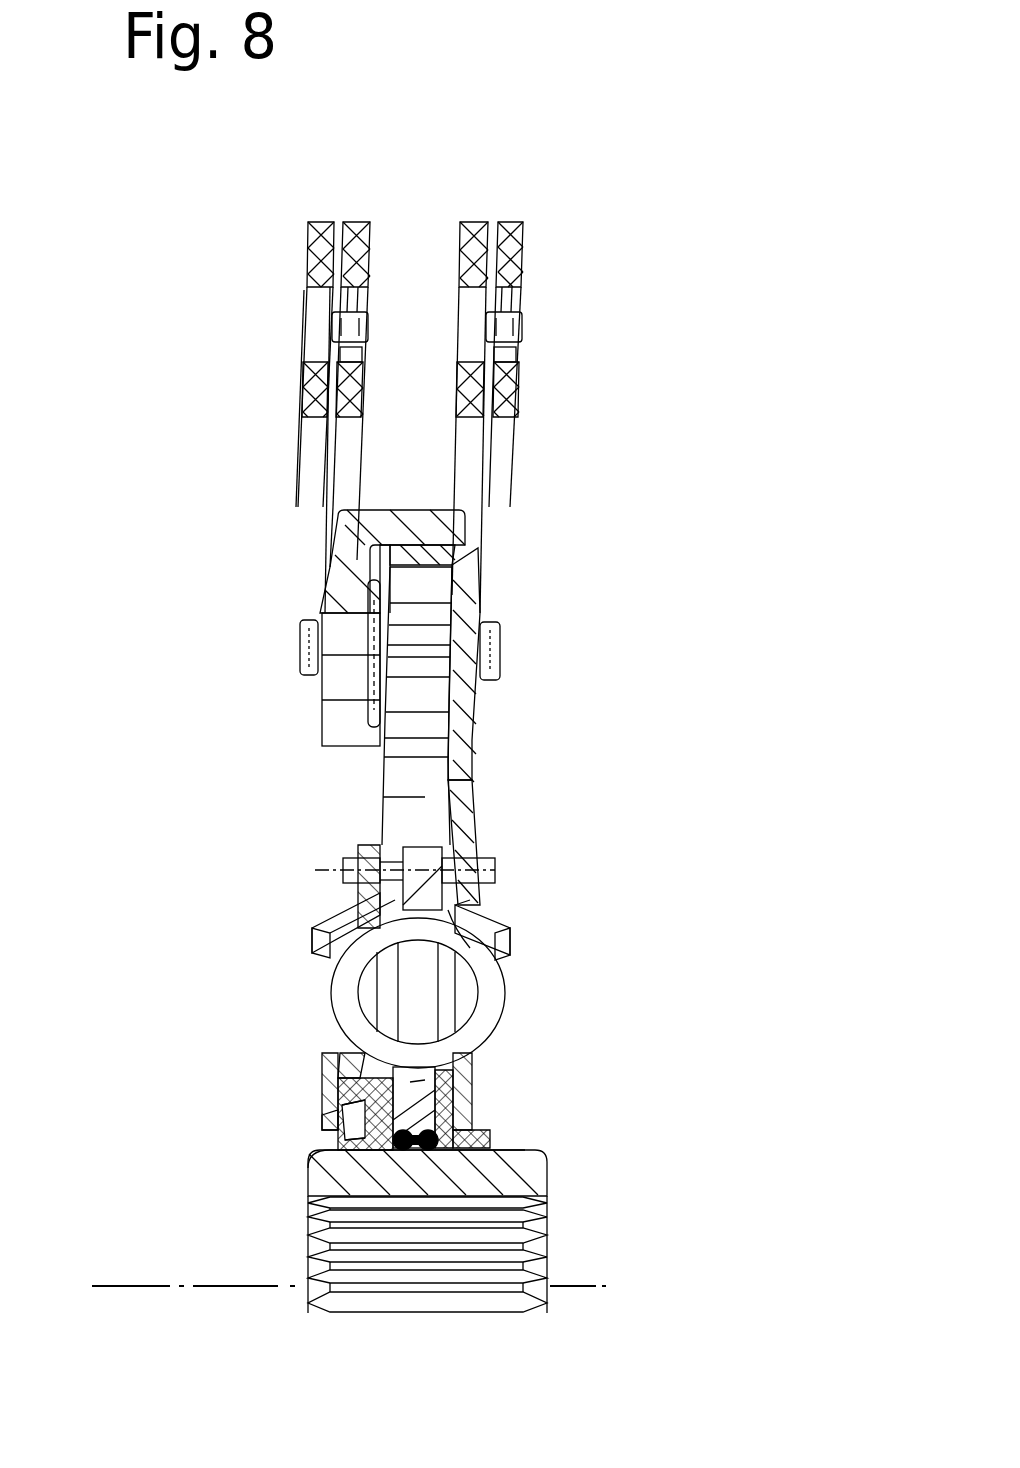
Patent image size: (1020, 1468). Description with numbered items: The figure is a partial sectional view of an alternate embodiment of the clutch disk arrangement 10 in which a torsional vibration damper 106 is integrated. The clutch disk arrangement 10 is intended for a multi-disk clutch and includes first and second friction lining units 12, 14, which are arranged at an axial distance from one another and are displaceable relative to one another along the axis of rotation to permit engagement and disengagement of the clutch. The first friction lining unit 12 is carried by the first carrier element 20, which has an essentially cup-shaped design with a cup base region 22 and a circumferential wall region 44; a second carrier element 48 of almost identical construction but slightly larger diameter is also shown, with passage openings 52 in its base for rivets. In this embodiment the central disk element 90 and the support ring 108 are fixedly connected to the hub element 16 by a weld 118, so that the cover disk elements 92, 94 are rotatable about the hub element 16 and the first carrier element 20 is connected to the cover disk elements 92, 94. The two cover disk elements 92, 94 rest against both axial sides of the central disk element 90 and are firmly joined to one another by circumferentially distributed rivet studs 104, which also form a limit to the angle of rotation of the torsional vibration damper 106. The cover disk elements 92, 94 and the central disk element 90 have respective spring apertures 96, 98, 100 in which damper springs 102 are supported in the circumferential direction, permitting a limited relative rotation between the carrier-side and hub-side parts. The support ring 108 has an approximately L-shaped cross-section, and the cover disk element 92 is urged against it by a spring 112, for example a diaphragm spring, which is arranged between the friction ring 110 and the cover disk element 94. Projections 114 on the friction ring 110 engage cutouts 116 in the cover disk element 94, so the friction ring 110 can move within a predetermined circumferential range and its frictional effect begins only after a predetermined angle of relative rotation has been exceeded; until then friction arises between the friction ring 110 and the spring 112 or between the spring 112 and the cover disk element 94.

The clutch disk arrangement 10 is at (705, 256).
The first friction lining unit 12 is at (495, 200).
The second friction lining unit 14 is at (337, 200).
The hub element 16 is at (540, 1180).
The first carrier element 20 is at (480, 607).
The cup base region 22 is at (478, 806).
The circumferential wall region 44 is at (440, 549).
The second carrier element 48 is at (340, 591).
The passage openings 52 is at (408, 510).
The central disk element 90 is at (460, 1072).
The cover disk element 92 is at (470, 1082).
The cover disk element 94 is at (328, 1062).
The spring aperture 96 is at (498, 932).
The spring aperture 98 is at (430, 1075).
The spring aperture 100 is at (342, 1050).
The damper spring 102 is at (345, 970).
The rivet studs 104 is at (492, 871).
The torsional vibration damper 106 is at (628, 766).
The support ring 108 is at (492, 1140).
The friction ring 110 is at (352, 1044).
The spring 112 is at (312, 1168).
The projections 114 is at (322, 1107).
The cutouts 116 is at (322, 1084).
The weld 118 is at (475, 1122).